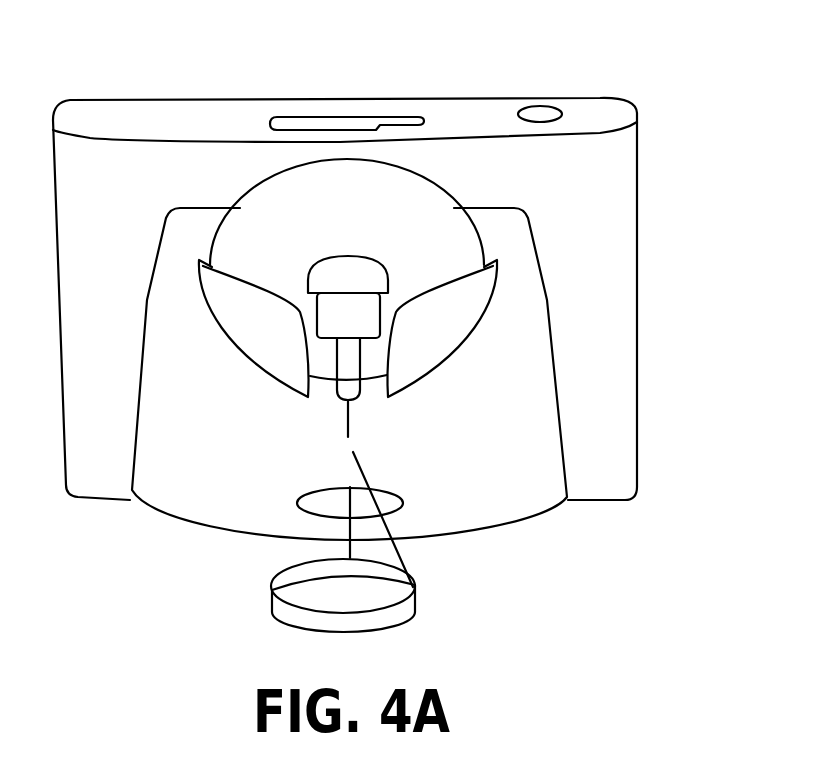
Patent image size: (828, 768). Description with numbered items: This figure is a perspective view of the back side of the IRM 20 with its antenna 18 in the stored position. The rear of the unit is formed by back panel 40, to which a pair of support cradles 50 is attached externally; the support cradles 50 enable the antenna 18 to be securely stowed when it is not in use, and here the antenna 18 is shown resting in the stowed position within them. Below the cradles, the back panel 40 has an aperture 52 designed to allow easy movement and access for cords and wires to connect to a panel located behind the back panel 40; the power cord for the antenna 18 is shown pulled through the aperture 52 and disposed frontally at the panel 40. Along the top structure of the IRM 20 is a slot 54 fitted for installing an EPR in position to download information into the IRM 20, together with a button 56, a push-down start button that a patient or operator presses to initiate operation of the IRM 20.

The antenna 18 is at (417, 213).
The IRM 20 is at (665, 332).
The back panel 40 is at (512, 508).
The support cradles 50 is at (268, 355).
The aperture 52 is at (403, 497).
The slot 54 is at (348, 120).
The button 56 is at (543, 110).